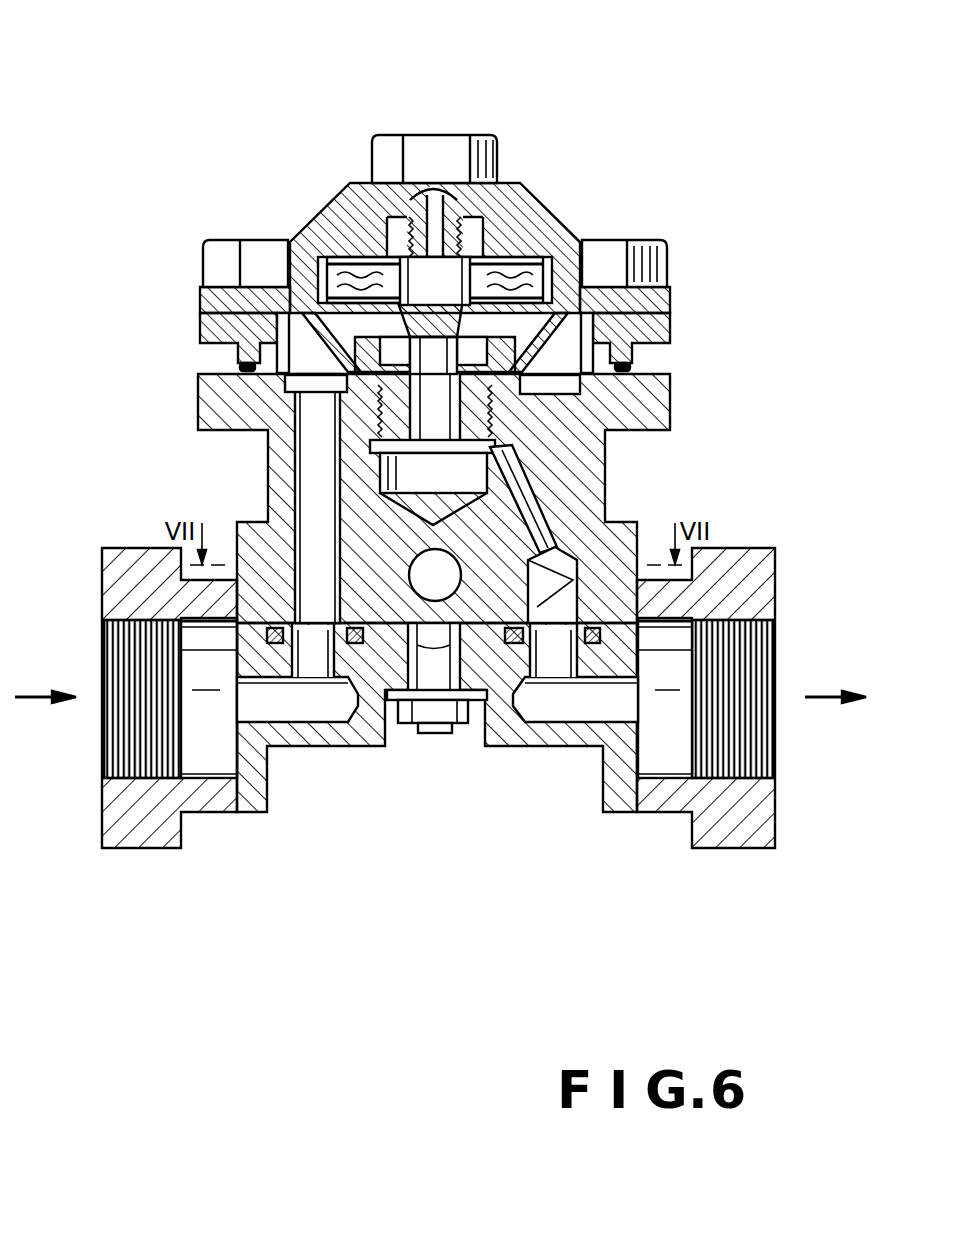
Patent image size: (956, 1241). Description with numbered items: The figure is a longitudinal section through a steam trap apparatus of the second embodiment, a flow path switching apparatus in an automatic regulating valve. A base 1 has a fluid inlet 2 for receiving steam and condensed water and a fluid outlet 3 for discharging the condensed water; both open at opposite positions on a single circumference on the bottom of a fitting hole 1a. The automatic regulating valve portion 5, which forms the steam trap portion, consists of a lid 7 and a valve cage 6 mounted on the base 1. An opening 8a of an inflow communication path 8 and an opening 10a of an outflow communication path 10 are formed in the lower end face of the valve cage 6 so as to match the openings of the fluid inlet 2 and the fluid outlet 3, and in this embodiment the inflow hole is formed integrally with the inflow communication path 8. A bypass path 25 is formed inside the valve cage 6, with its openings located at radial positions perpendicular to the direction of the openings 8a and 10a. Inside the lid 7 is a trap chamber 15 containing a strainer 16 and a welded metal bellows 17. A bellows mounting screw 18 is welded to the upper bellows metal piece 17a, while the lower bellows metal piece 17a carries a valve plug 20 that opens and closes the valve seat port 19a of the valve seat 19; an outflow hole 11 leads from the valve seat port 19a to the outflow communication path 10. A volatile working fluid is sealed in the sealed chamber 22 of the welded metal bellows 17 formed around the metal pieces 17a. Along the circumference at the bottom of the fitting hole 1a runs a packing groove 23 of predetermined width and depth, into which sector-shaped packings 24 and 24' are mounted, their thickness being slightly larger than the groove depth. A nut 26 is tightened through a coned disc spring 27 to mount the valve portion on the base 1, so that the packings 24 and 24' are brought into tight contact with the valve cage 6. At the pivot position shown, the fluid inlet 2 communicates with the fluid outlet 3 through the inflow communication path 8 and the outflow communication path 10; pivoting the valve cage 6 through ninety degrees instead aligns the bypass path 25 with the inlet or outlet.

The base 1 is at (467, 578).
The fitting hole 1a is at (441, 399).
The fluid inlet 2 is at (270, 707).
The fluid outlet 3 is at (613, 712).
The automatic regulating valve portion 5 is at (446, 193).
The valve cage 6 is at (215, 402).
The lid 7 is at (217, 302).
The inflow communication path 8 is at (310, 512).
The opening of the inflow communication path 8a is at (320, 678).
The outflow communication path 10 is at (700, 603).
The opening of the outflow communication path 10a is at (548, 697).
The outflow hole 11 is at (507, 503).
The trap chamber 15 is at (283, 345).
The strainer 16 is at (553, 350).
The welded metal bellows 17 is at (576, 240).
The bellows metal piece 17a is at (550, 237).
The bellows mounting screw 18 is at (467, 156).
The valve seat 19 is at (310, 335).
The valve seat port 19a is at (427, 457).
The valve plug 20 is at (368, 284).
The sealed chamber 22 is at (380, 252).
The packing groove 23 is at (510, 640).
The packing 24 is at (319, 718).
The packing 24' is at (558, 738).
The bypass path 25 is at (424, 590).
The nut 26 is at (405, 715).
The coned disc spring 27 is at (478, 700).